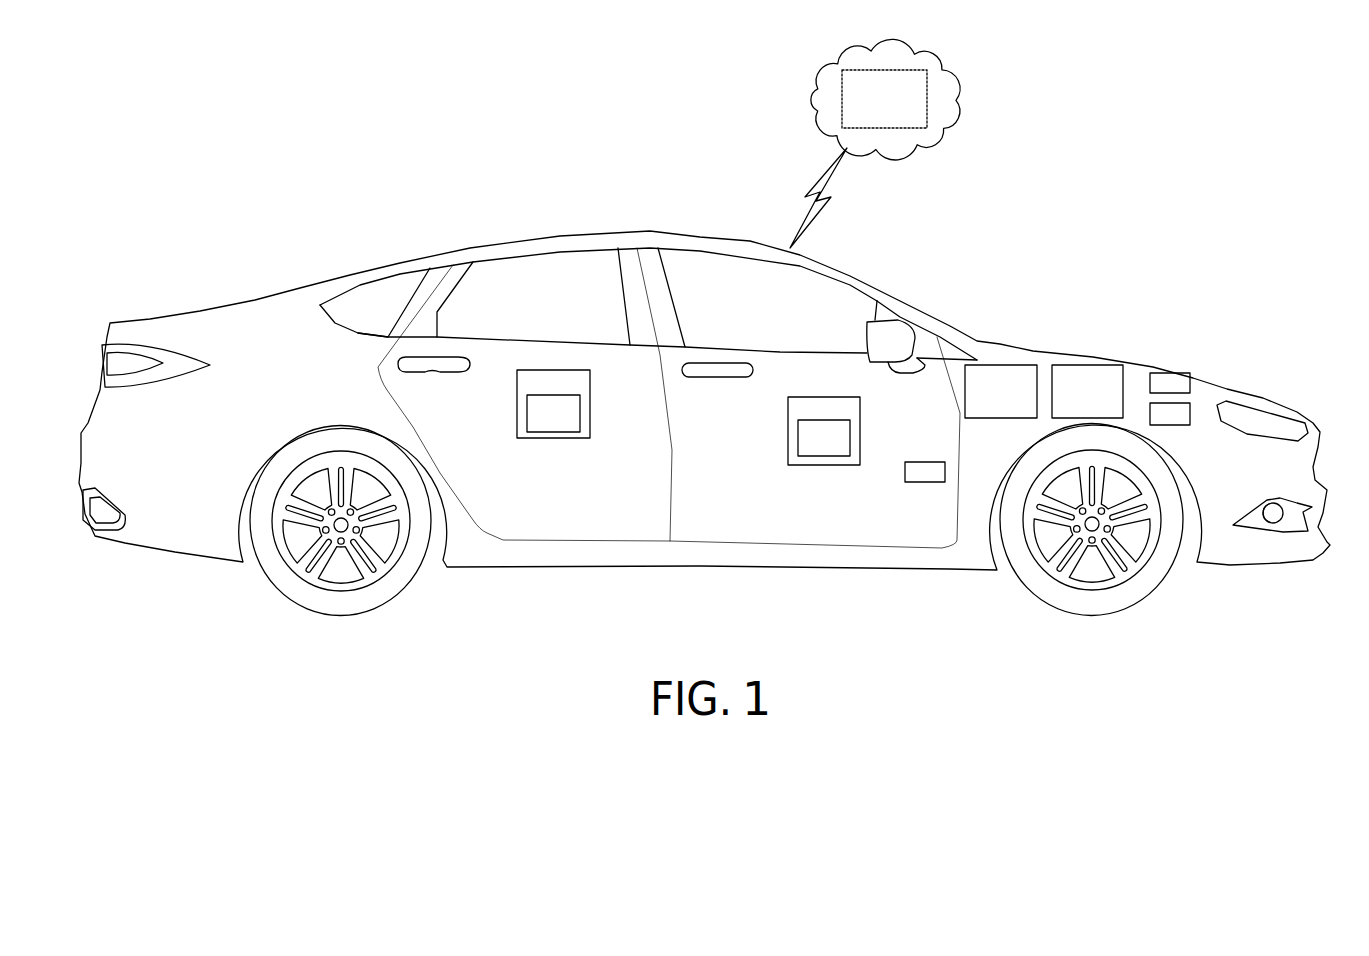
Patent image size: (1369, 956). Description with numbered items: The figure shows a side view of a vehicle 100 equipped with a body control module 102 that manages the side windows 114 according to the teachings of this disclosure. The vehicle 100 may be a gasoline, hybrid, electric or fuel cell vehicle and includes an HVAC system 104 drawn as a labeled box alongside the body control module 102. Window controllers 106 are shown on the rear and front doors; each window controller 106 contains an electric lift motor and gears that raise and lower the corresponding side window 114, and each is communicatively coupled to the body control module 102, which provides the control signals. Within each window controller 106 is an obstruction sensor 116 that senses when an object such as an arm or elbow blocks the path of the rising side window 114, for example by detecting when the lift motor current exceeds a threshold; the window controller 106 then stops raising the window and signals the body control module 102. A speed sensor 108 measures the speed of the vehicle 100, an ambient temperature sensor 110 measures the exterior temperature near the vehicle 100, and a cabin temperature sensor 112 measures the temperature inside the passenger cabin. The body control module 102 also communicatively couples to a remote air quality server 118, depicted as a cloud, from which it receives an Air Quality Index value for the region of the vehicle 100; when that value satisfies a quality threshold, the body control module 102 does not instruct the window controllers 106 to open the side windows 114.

The vehicle 100 is at (130, 323).
The body control module 102 is at (1088, 365).
The HVAC system 104 is at (1000, 364).
The window controllers 106 is at (590, 382).
The speed sensor 108 is at (925, 482).
The ambient temperature sensor 110 is at (1190, 383).
The cabin temperature sensor 112 is at (1190, 413).
The side windows 114 is at (556, 262).
The obstruction sensor 116 is at (538, 424).
The air quality server 118 is at (927, 97).